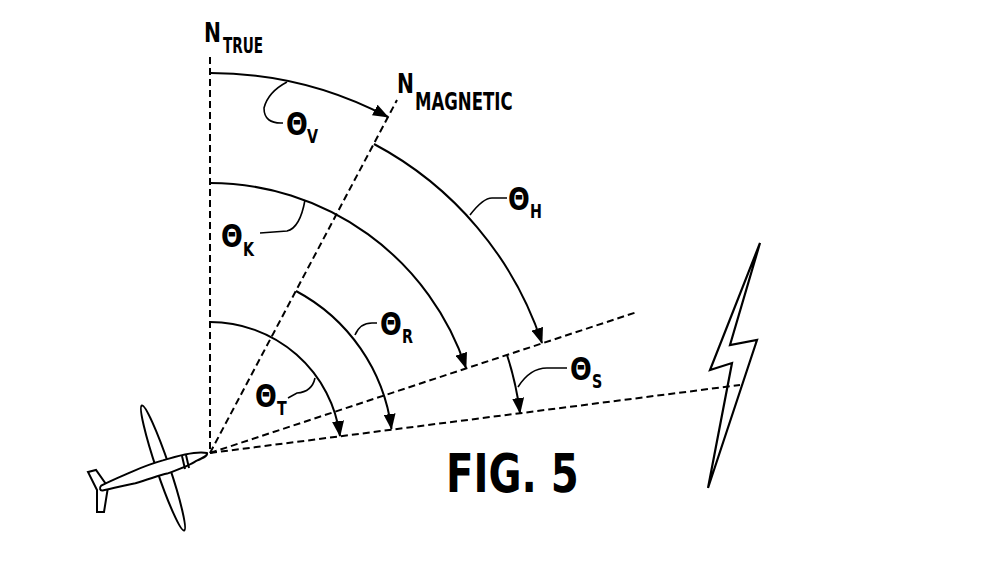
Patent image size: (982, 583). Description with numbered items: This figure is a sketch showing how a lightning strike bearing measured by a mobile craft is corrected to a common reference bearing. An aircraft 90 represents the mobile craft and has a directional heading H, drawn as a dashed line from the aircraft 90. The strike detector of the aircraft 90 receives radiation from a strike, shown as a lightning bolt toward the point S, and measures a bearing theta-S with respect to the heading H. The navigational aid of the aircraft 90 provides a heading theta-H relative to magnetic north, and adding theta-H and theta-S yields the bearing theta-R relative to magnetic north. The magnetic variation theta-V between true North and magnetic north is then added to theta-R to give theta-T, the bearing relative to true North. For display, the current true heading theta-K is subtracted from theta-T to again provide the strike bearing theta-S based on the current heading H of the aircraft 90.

The aircraft 90 is at (140, 467).
The directional heading H is at (436, 375).
The lightning strike source S is at (492, 365).